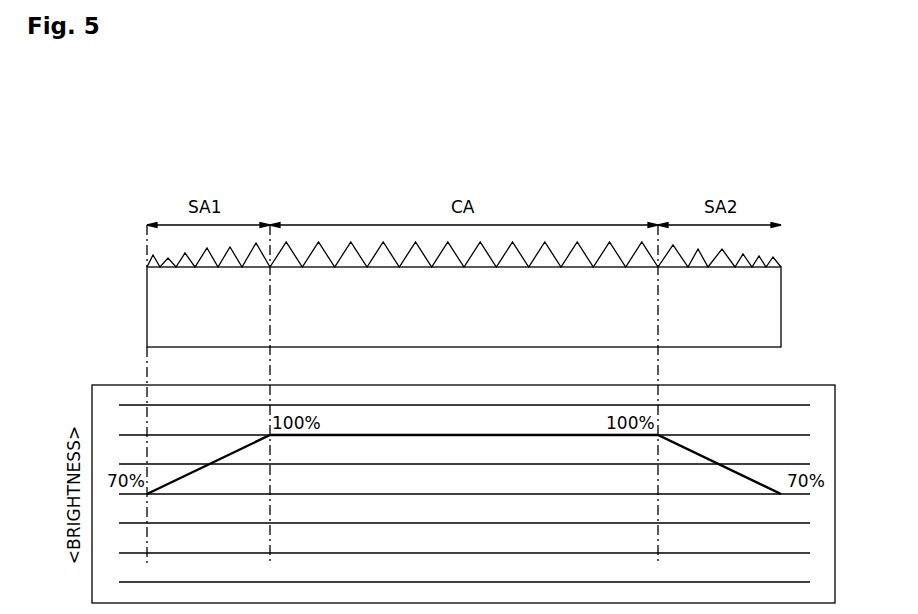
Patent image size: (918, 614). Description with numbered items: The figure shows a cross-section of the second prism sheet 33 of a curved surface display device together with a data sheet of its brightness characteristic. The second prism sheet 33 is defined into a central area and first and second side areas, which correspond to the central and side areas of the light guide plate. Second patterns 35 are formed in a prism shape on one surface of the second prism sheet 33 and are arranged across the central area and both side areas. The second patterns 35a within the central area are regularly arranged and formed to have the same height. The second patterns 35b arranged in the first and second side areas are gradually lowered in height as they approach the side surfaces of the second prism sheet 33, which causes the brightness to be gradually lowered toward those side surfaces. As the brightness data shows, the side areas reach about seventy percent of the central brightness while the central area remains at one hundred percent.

The second prism sheet 33 is at (150, 309).
The second patterns 35 is at (363, 140).
The second patterns within the central area 35a is at (351, 240).
The second patterns arranged in the side areas 35b is at (230, 248).